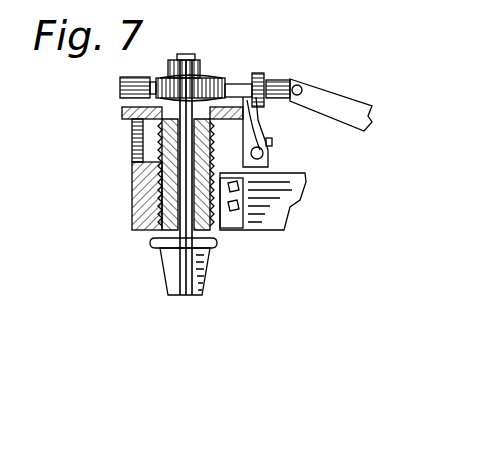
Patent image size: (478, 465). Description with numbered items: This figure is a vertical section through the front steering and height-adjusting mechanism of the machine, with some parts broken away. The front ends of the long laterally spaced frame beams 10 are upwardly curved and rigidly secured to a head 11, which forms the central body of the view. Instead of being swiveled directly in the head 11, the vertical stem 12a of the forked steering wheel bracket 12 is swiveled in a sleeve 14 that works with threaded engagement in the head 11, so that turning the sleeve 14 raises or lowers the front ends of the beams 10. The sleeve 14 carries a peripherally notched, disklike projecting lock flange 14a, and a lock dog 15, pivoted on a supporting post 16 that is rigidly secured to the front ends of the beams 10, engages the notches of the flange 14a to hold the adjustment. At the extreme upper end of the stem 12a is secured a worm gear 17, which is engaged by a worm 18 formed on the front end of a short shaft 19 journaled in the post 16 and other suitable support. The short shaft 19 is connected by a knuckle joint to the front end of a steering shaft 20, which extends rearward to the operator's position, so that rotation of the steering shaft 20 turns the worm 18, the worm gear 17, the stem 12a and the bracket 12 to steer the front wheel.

The frame beams 10 is at (273, 212).
The head 11 is at (140, 187).
The steering wheel bracket 12 is at (203, 272).
The vertical stem 12a is at (157, 252).
The sleeve 14 is at (150, 233).
The lock flange 14a is at (133, 131).
The lock dog 15 is at (265, 131).
The supporting post 16 is at (266, 78).
The worm gear 17 is at (235, 85).
The worm 18 is at (213, 76).
The short shaft 19 is at (258, 72).
The steering shaft 20 is at (348, 111).